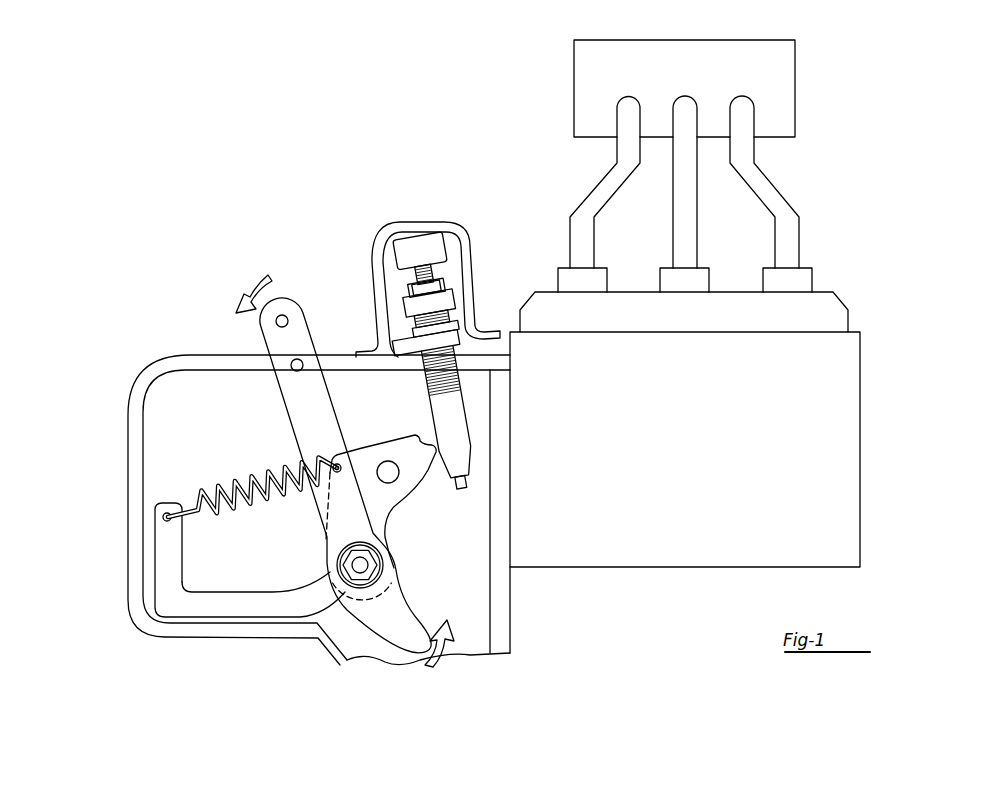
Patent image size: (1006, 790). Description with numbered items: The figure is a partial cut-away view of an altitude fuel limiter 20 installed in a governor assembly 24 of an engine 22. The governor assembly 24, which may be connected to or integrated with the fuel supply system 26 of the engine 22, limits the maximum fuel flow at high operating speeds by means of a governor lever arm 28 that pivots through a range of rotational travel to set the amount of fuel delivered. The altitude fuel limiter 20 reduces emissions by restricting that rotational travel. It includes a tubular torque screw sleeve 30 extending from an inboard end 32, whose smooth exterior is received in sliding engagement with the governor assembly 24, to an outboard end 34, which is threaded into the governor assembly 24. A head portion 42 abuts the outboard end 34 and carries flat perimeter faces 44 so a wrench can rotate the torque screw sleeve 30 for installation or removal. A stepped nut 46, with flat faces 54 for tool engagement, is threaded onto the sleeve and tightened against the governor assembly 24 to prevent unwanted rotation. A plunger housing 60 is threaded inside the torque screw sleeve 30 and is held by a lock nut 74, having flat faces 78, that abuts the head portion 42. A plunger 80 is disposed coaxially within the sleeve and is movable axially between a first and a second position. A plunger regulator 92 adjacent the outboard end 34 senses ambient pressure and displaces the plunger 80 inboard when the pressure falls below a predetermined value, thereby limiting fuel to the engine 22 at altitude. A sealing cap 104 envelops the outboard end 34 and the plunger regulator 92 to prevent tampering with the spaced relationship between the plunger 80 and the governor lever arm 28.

The altitude fuel limiter 20 is at (345, 273).
The engine 22 is at (676, 71).
The governor assembly 24 is at (476, 660).
The fuel supply system 26 is at (895, 288).
The governor lever arm 28 is at (293, 403).
The torque screw sleeve 30 is at (437, 412).
The inboard end 32 is at (451, 491).
The outboard end 34 is at (463, 284).
The head portion 42 is at (412, 307).
The flat perimeter faces 44 is at (452, 297).
The stepped nut 46 is at (463, 329).
The flat faces 54 is at (423, 336).
The plunger housing 60 is at (412, 272).
The lock nut 74 is at (410, 287).
The flat faces 78 is at (458, 275).
The plunger 80 is at (460, 492).
The plunger regulator 92 is at (437, 241).
The sealing cap 104 is at (402, 224).